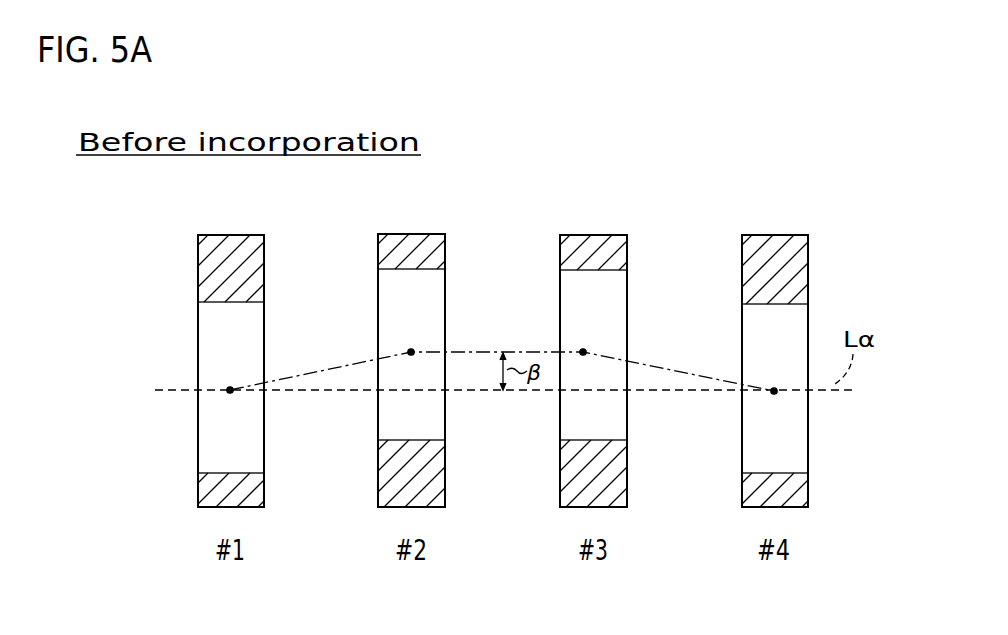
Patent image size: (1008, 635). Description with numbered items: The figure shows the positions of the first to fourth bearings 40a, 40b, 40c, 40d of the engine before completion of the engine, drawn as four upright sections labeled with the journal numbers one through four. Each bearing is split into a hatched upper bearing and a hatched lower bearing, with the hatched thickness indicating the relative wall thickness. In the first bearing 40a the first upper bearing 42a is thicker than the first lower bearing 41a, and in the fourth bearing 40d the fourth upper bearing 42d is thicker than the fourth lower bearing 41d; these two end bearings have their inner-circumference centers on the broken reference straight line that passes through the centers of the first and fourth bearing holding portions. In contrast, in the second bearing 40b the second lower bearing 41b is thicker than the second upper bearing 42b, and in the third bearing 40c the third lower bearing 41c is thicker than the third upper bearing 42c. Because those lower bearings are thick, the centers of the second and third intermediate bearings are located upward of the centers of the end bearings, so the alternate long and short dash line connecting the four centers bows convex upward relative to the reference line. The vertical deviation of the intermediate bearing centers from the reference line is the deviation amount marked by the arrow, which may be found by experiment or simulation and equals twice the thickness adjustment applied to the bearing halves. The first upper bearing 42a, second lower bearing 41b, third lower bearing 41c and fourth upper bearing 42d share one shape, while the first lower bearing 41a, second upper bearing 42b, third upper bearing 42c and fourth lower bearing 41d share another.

The first bearing 40a is at (247, 232).
The second bearing 40b is at (428, 231).
The third bearing 40c is at (609, 232).
The fourth bearing 40d is at (791, 232).
The first lower bearing 41a is at (257, 485).
The second lower bearing 41b is at (438, 485).
The third lower bearing 41c is at (620, 485).
The fourth lower bearing 41d is at (802, 485).
The first upper bearing 42a is at (255, 270).
The second upper bearing 42b is at (438, 248).
The third upper bearing 42c is at (620, 248).
The fourth upper bearing 42d is at (802, 272).